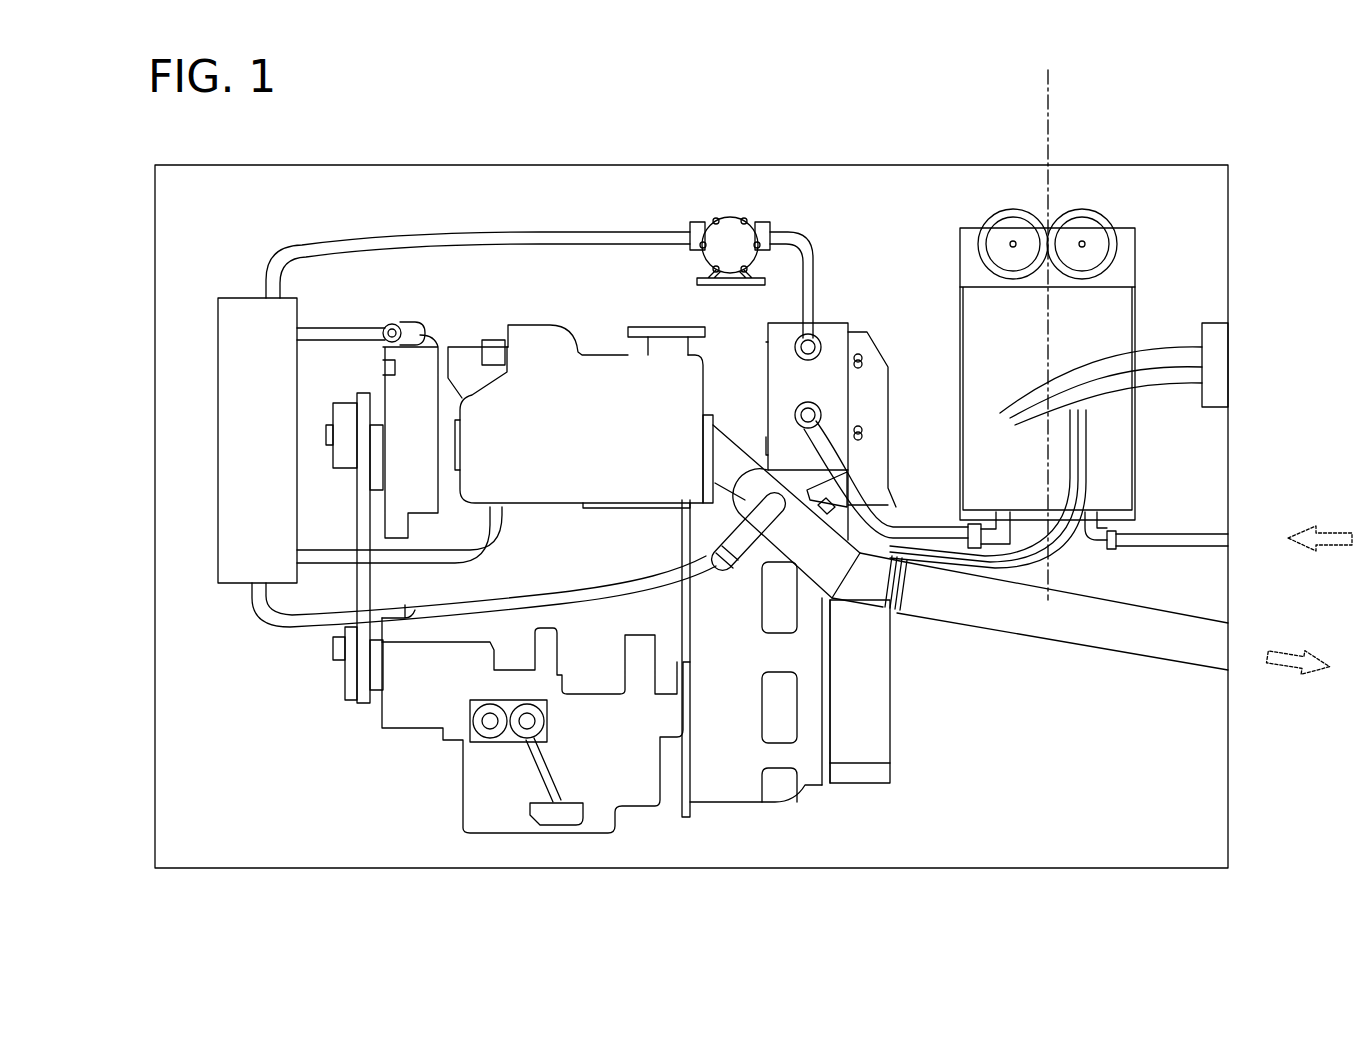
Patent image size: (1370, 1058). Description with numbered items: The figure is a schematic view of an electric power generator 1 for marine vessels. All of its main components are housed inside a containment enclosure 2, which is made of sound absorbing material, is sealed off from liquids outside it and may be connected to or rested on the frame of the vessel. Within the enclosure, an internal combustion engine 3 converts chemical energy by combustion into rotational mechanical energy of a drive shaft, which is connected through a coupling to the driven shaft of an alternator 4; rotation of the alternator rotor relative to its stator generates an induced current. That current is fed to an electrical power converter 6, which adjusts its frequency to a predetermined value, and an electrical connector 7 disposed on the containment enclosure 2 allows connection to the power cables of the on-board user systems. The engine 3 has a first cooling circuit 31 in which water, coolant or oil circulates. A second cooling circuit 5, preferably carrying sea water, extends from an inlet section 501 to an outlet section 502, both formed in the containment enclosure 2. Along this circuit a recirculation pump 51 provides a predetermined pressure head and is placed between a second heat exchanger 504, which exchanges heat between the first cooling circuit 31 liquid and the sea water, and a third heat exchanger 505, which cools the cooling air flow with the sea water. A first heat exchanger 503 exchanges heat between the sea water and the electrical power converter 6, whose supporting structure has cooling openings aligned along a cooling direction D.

The electric power generator 1 is at (612, 147).
The containment enclosure 2 is at (931, 163).
The internal combustion engine 3 is at (592, 441).
The alternator 4 is at (744, 712).
The second cooling circuit 5 is at (298, 246).
The electrical power converter 6 is at (1124, 229).
The electrical connector 7 is at (1220, 350).
The first cooling circuit 31 is at (348, 330).
The recirculation pump 51 is at (730, 250).
The inlet section 501 is at (1228, 537).
The outlet section 502 is at (1228, 646).
The first heat exchanger 503 is at (1077, 533).
The second heat exchanger 504 is at (278, 456).
The third heat exchanger 505 is at (839, 315).
The cooling direction D is at (1048, 135).